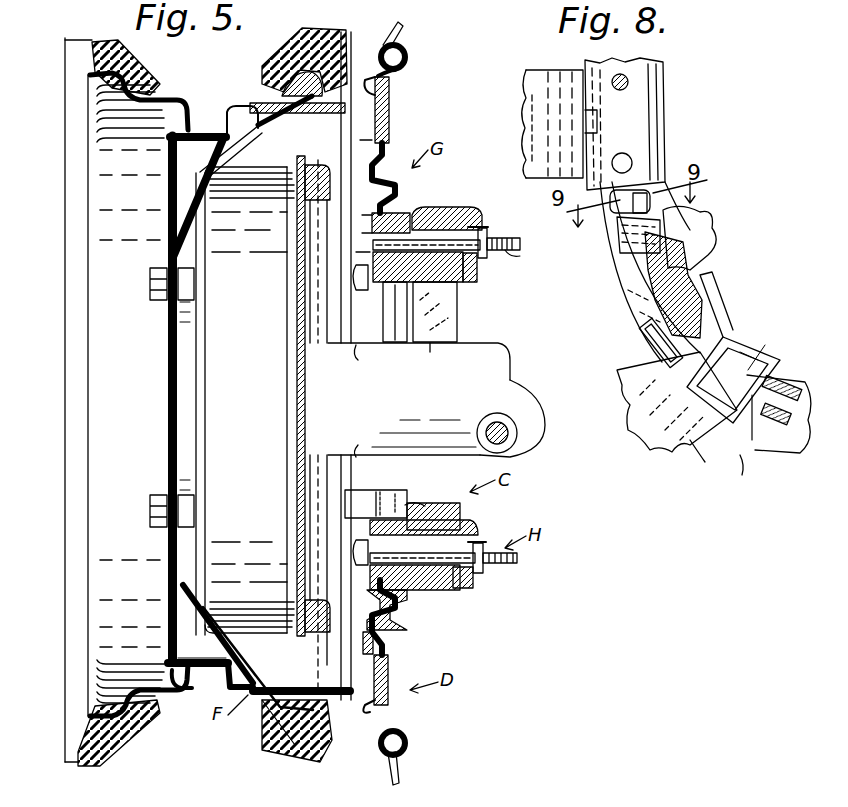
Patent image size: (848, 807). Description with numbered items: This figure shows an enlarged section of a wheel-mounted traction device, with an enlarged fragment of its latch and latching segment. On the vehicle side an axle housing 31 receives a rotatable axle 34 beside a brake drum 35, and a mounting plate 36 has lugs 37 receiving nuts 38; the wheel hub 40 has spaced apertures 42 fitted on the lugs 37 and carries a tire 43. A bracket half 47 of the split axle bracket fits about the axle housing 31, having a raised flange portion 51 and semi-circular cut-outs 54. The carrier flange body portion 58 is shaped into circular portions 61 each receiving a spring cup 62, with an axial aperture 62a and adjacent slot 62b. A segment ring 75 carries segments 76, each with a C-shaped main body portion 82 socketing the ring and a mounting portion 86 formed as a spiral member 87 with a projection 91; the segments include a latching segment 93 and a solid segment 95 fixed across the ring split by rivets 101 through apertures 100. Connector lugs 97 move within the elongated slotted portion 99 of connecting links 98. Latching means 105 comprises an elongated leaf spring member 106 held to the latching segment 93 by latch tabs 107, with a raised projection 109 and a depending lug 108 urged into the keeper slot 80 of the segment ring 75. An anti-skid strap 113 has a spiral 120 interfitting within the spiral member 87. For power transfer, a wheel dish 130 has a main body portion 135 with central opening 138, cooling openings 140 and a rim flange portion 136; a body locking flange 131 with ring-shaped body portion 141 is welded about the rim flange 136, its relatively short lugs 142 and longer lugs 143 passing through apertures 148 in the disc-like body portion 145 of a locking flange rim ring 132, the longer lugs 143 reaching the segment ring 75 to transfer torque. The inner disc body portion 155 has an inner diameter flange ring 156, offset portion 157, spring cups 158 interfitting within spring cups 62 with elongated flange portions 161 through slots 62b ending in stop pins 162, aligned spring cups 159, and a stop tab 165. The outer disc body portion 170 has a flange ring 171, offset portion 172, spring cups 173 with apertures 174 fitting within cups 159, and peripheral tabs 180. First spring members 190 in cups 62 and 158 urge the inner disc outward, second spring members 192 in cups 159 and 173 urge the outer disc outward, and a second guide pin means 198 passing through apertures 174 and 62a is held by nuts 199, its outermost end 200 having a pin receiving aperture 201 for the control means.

In FIG. 5, the axle housing 31 is at (510, 360).
In FIG. 5, the axle 34 is at (520, 415).
In FIG. 5, the brake drum 35 is at (222, 376).
In FIG. 5, the mounting plate 36 is at (190, 420).
In FIG. 5, the lugs 37 is at (196, 282).
In FIG. 5, the nuts 38 is at (150, 280).
In FIG. 5, the hub 40 is at (88, 652).
In FIG. 5, the spaced apertures 42 is at (150, 530).
In FIG. 5, the tire 43 is at (283, 50).
In FIG. 5, the bracket half 47 is at (464, 329).
In FIG. 5, the raised flange portion 51 is at (430, 345).
In FIG. 5, the outer semi-circular cut-outs 54 is at (466, 284).
In FIG. 5, the body portion 58 is at (456, 204).
In FIG. 5, the spaced circular portions 61 is at (468, 536).
In FIG. 5, the spring cup 62 is at (422, 590).
In FIG. 5, the aperture 62a is at (462, 270).
In FIG. 5, the slot 62b is at (466, 588).
In FIG. 5, the segment ring 75 is at (392, 108).
In FIG. 5, the segments 76 is at (423, 77).
In FIG. 8, the slot 80 is at (600, 222).
In FIG. 8, the C-shaped main body portion 82 is at (665, 120).
In FIG. 8, the mounting portion 86 is at (541, 182).
In FIG. 5, the spiral member 87 is at (406, 742).
In FIG. 8, the projection 91 is at (597, 122).
In FIG. 8, the latching segment 93 is at (738, 302).
In FIG. 8, the solid segment 95 is at (679, 84).
In FIG. 8, the connector lug 97 is at (755, 440).
In FIG. 8, the connecting links 98 is at (782, 384).
In FIG. 8, the elongated slotted portion 99 is at (798, 450).
In FIG. 8, the apertures 100 is at (628, 78).
In FIG. 8, the rivets 101 is at (635, 148).
In FIG. 8, the latching means 105 is at (631, 314).
In FIG. 8, the elongated leaf spring member 106 is at (690, 272).
In FIG. 8, the latch tabs 107 is at (735, 342).
In FIG. 8, the depending lug 108 is at (652, 205).
In FIG. 8, the raised projection 109 is at (622, 260).
In FIG. 5, the elongated strap 113 is at (402, 26).
In FIG. 5, the spiral 120 is at (405, 56).
In FIG. 5, the wheel dish 130 is at (178, 185).
In FIG. 5, the body locking flange 131 is at (292, 712).
In FIG. 5, the locking flange rim ring 132 is at (331, 665).
In FIG. 5, the main body portion 135 is at (176, 600).
In FIG. 5, the rim flange portion 136 is at (268, 672).
In FIG. 5, the central opening 138 is at (196, 320).
In FIG. 5, the spaced apart openings 140 is at (242, 104).
In FIG. 5, the ring-shaped body portion 141 is at (325, 72).
In FIG. 5, the relatively short lugs 142 is at (312, 114).
In FIG. 5, the relatively longer lugs 143 is at (371, 401).
In FIG. 5, the disc-like main body portion 145 is at (330, 712).
In FIG. 5, the apertures 148 is at (300, 735).
In FIG. 5, the disc-like main body portion 155 is at (390, 616).
In FIG. 8, the disc-like main body portion 155 is at (712, 232).
In FIG. 5, the inner diameter flange ring 156 is at (440, 490).
In FIG. 5, the offset portion 157 is at (392, 650).
In FIG. 5, the spring cups 158 is at (461, 516).
In FIG. 5, the aligned spring cups 159 is at (415, 506).
In FIG. 5, the elongated flange portion 161 is at (486, 226).
In FIG. 5, the stop pin 162 is at (474, 226).
In FIG. 8, the stop tab 165 is at (625, 282).
In FIG. 5, the disc-like main body portion 170 is at (362, 214).
In FIG. 5, the inner diameter flange ring 171 is at (391, 493).
In FIG. 5, the offset portion 172 is at (360, 140).
In FIG. 5, the spring cups 173 is at (396, 284).
In FIG. 5, the aperture 174 is at (356, 252).
In FIG. 5, the tabs 180 is at (356, 278).
In FIG. 5, the first spring members 190 is at (412, 213).
In FIG. 5, the second spring members 192 is at (362, 233).
In FIG. 5, the second guide pin means 198 is at (372, 556).
In FIG. 5, the nuts 199 is at (482, 243).
In FIG. 5, the outermost end 200 is at (520, 252).
In FIG. 5, the pin receiving aperture 201 is at (520, 238).